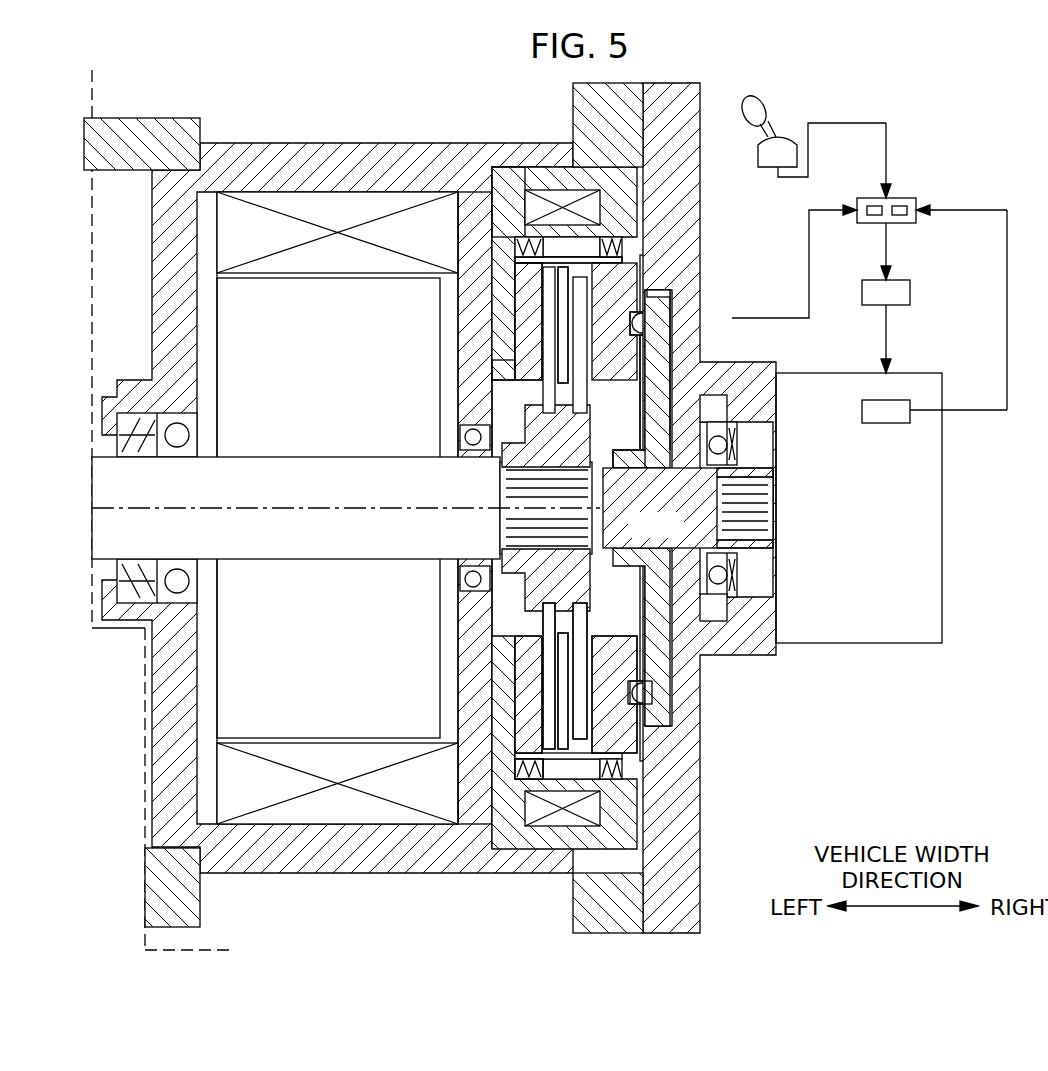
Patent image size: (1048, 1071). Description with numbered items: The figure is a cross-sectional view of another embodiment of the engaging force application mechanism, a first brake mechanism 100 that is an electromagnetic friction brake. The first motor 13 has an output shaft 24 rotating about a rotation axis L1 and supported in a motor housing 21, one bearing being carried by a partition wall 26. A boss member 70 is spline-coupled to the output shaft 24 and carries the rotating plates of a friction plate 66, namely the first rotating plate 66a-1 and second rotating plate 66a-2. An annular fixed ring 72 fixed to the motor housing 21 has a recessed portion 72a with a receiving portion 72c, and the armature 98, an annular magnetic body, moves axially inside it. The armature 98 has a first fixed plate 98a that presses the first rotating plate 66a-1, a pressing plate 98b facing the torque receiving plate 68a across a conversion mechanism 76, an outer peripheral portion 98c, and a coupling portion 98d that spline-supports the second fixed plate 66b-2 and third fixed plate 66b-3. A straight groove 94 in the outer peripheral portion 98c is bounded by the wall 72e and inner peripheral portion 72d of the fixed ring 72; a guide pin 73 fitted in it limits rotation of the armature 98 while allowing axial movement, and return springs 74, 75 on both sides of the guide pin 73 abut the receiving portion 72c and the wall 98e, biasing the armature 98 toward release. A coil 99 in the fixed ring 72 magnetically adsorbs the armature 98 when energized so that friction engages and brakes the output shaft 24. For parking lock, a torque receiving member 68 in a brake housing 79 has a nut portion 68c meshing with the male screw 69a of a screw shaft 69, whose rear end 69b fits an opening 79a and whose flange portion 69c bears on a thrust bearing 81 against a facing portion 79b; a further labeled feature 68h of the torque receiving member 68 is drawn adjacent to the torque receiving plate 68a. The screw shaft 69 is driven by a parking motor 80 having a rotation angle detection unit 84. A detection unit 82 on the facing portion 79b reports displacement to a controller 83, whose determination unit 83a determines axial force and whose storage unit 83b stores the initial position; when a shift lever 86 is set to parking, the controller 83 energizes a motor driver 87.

The first motor 13 is at (258, 180).
The motor housing 21 is at (372, 160).
The output shaft 24 is at (314, 456).
The partition wall 26 is at (470, 620).
The friction plate 66 is at (506, 685).
The first rotating plate 66a-1 is at (583, 695).
The second rotating plate 66a-2 is at (549, 727).
The second fixed plate 66b-2 is at (563, 710).
The third fixed plate 66b-3 is at (530, 735).
The torque receiving member 68 is at (680, 648).
The torque receiving plate 68a is at (668, 330).
The nut portion 68c is at (626, 460).
The drum hole 68h is at (660, 292).
The screw shaft 69 is at (736, 508).
The male screw 69a is at (654, 470).
The rear end 69b is at (752, 474).
The flange portion 69c is at (715, 410).
The boss member 70 is at (560, 440).
The fixed ring 72 is at (490, 192).
The recessed portion 72a is at (513, 375).
The receiving portion 72c is at (560, 345).
The inner peripheral portion 72d is at (570, 237).
The wall 72e is at (517, 770).
The guide pin 73 is at (566, 826).
The return spring 74 is at (520, 250).
The return spring 75 is at (612, 240).
The conversion mechanism 76 is at (655, 702).
The brake housing 79 is at (683, 862).
The opening 79a is at (757, 552).
The facing portion 79b is at (737, 577).
The parking motor 80 is at (912, 518).
The thrust bearing 81 is at (722, 598).
The detection unit 82 is at (738, 445).
The controller 83 is at (918, 205).
The determination unit 83a is at (872, 209).
The storage unit 83b is at (896, 209).
The rotation angle detection unit 84 is at (897, 400).
The shift lever 86 is at (758, 112).
The motor driver 87 is at (912, 292).
The straight groove 94 is at (598, 802).
The armature 98 is at (650, 255).
The first fixed plate 98a is at (640, 300).
The pressing plate 98b is at (648, 360).
The outer peripheral portion 98c is at (528, 325).
The coupling portion 98d is at (530, 262).
The wall 98e is at (620, 752).
The coil 99 is at (520, 205).
The first brake mechanism 100 is at (774, 270).
The rotation axis L1 is at (352, 510).